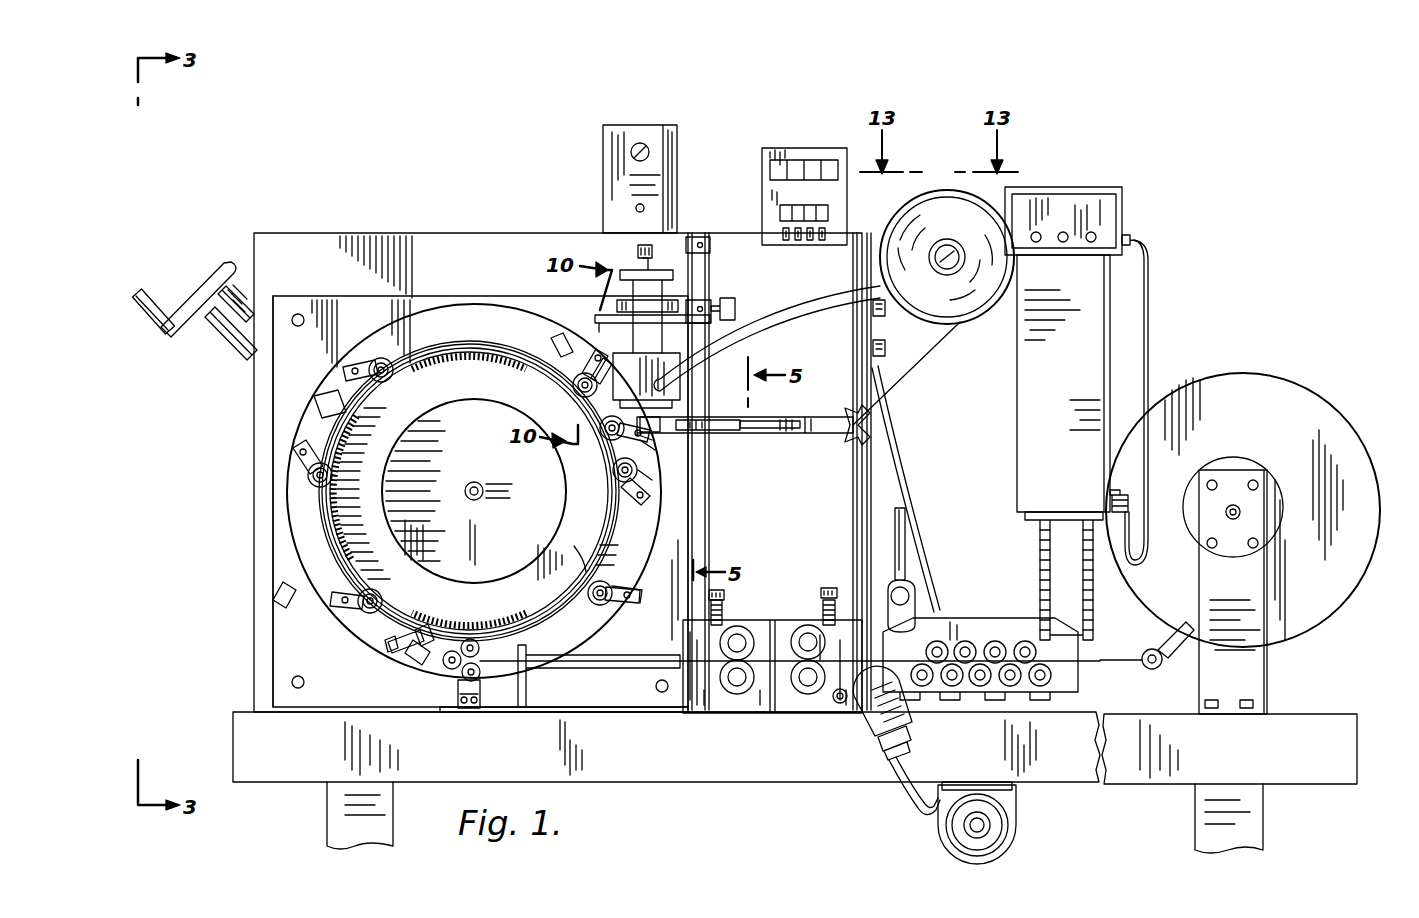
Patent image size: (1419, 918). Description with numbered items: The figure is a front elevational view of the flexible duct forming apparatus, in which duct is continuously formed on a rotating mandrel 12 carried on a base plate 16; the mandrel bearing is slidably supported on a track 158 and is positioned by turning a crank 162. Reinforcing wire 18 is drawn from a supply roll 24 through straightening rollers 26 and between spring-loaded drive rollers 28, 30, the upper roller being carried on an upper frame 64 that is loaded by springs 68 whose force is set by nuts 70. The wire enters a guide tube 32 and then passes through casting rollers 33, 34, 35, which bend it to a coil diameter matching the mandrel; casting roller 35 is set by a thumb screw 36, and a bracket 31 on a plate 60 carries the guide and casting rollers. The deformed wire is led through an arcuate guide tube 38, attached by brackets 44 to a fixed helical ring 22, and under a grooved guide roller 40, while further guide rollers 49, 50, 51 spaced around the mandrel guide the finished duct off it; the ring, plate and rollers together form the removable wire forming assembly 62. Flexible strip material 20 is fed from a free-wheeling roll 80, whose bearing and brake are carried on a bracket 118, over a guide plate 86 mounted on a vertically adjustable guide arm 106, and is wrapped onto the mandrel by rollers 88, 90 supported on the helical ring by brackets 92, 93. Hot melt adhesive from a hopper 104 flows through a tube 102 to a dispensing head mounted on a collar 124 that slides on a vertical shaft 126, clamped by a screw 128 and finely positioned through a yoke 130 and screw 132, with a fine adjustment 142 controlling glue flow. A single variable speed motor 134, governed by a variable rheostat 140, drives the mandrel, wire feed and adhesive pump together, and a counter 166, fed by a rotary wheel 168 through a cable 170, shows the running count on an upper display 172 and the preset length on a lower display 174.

The mandrel 12 is at (350, 525).
The base plate 16 is at (352, 240).
The reinforcing wire 18 is at (592, 407).
The flexible strip material 20 is at (880, 372).
The fixed helical ring 22 is at (626, 592).
The supply roll 24 is at (1278, 395).
The straightening rollers 26 is at (1022, 640).
The drive roller 28 is at (720, 641).
The drive roller 30 is at (737, 695).
The bracket 31 is at (562, 712).
The guide tube 32 is at (586, 660).
The casting roller 33 is at (488, 678).
The casting roller 34 is at (470, 640).
The casting roller 35 is at (444, 668).
The thumb screw 36 is at (395, 664).
The arcuate guide tube 38 is at (322, 490).
The guide roller 40 is at (578, 384).
The brackets 44 is at (310, 402).
The guide roller 49 is at (598, 577).
The guide roller 50 is at (386, 598).
The guide roller 51 is at (388, 383).
The plate 60 is at (274, 428).
The wire forming assembly 62 is at (262, 455).
The upper frame 64 is at (822, 618).
The springs 68 is at (724, 606).
The nuts 70 is at (725, 594).
The free-wheeling roll 80 is at (932, 216).
The guide plate 86 is at (714, 420).
The roller 88 is at (610, 440).
The roller 90 is at (640, 442).
The bracket 92 is at (640, 468).
The bracket 93 is at (648, 432).
The tube 102 is at (852, 290).
The hopper 104 is at (1038, 378).
The guide arm 106 is at (806, 434).
The bracket 118 is at (868, 330).
The collar 124 is at (708, 290).
The vertical shaft 126 is at (705, 268).
The screw 128 is at (734, 306).
The yoke 130 is at (632, 270).
The screw 132 is at (645, 248).
The variable speed motor 134 is at (1016, 828).
The variable rheostat 140 is at (643, 150).
The fine adjustment 142 is at (1110, 497).
The track 158 is at (232, 350).
The crank 162 is at (200, 296).
The counter 166 is at (800, 148).
The rotary wheel 168 is at (868, 735).
The cable 170 is at (905, 443).
The upper display 172 is at (828, 160).
The lower display 174 is at (792, 208).